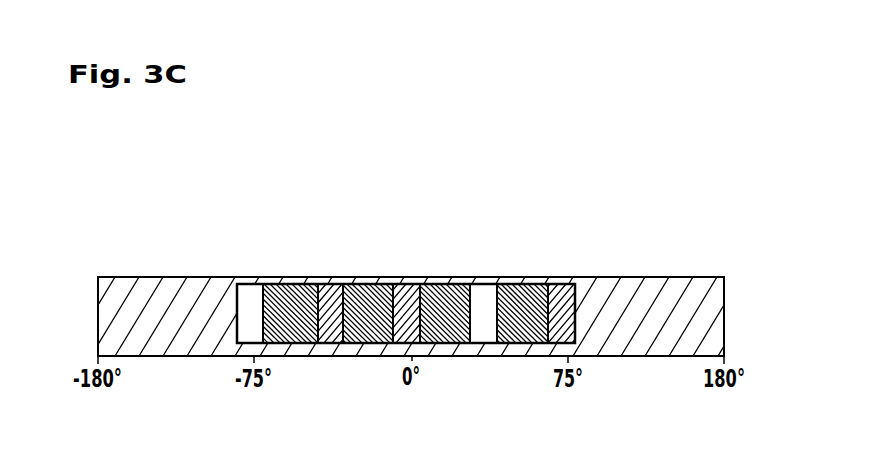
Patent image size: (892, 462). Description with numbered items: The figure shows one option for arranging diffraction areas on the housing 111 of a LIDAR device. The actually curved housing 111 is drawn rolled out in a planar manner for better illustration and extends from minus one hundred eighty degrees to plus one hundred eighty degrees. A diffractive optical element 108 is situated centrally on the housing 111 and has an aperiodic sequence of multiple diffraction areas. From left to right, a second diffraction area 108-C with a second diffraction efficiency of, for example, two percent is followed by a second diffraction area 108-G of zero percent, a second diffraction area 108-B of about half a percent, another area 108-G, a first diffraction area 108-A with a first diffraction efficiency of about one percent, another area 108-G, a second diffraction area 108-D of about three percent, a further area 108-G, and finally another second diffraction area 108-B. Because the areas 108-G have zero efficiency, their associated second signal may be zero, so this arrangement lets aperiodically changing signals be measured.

The diffractive optical element 108 is at (413, 295).
The first diffraction area 108-A is at (405, 283).
The second diffraction area 108-B is at (562, 283).
The second diffraction area 108-C is at (247, 283).
The second diffraction area 108-D is at (480, 283).
The second diffraction area 108-G is at (533, 390).
The housing 111 is at (708, 328).